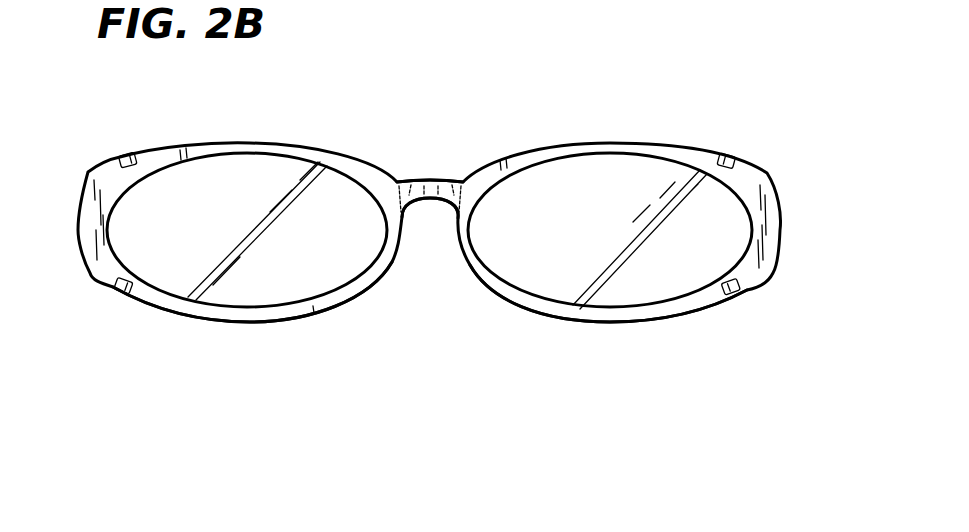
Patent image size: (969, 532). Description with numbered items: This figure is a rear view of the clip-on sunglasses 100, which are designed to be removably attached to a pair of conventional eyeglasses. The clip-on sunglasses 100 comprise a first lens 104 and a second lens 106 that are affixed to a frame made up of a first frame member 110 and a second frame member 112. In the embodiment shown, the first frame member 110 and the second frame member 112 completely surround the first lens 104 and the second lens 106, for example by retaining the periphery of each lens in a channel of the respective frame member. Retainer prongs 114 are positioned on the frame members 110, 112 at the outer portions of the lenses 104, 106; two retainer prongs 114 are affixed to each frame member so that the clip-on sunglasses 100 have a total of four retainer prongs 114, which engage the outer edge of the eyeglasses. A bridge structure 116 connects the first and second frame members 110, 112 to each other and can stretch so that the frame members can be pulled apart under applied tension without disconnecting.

The clip-on sunglasses 100 is at (465, 245).
The first lens 104 is at (590, 235).
The second lens 106 is at (352, 250).
The first frame member 110 is at (643, 321).
The second frame member 112 is at (262, 321).
The retainer prongs 114 is at (126, 152).
The bridge structure 116 is at (421, 158).